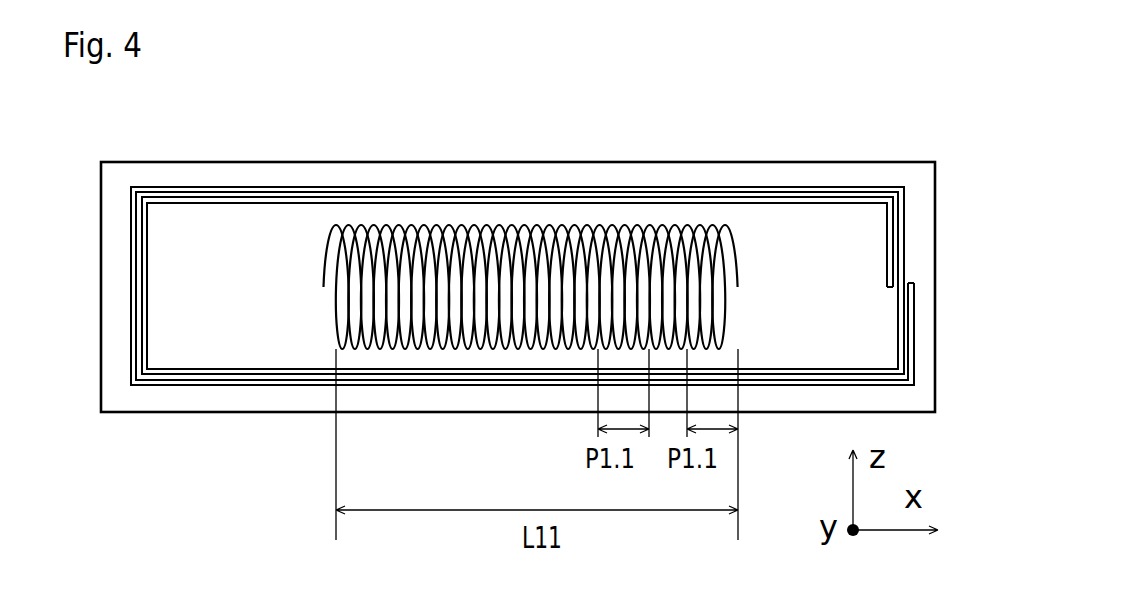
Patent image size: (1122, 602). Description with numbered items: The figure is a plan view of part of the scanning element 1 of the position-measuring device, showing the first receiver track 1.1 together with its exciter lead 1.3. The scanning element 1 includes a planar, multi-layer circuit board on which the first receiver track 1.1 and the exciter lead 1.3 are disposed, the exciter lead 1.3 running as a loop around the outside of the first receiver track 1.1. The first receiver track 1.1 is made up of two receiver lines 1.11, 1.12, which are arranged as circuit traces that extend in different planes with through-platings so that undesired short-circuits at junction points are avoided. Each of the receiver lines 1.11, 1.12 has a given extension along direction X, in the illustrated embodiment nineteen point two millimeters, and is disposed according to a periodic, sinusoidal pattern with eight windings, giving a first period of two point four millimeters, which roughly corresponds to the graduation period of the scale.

The scanning element 1 is at (514, 180).
The first receiver track 1.1 is at (531, 221).
The receiver line 1.11 is at (662, 225).
The receiver line 1.12 is at (725, 225).
The exciter lead 1.3 is at (230, 187).